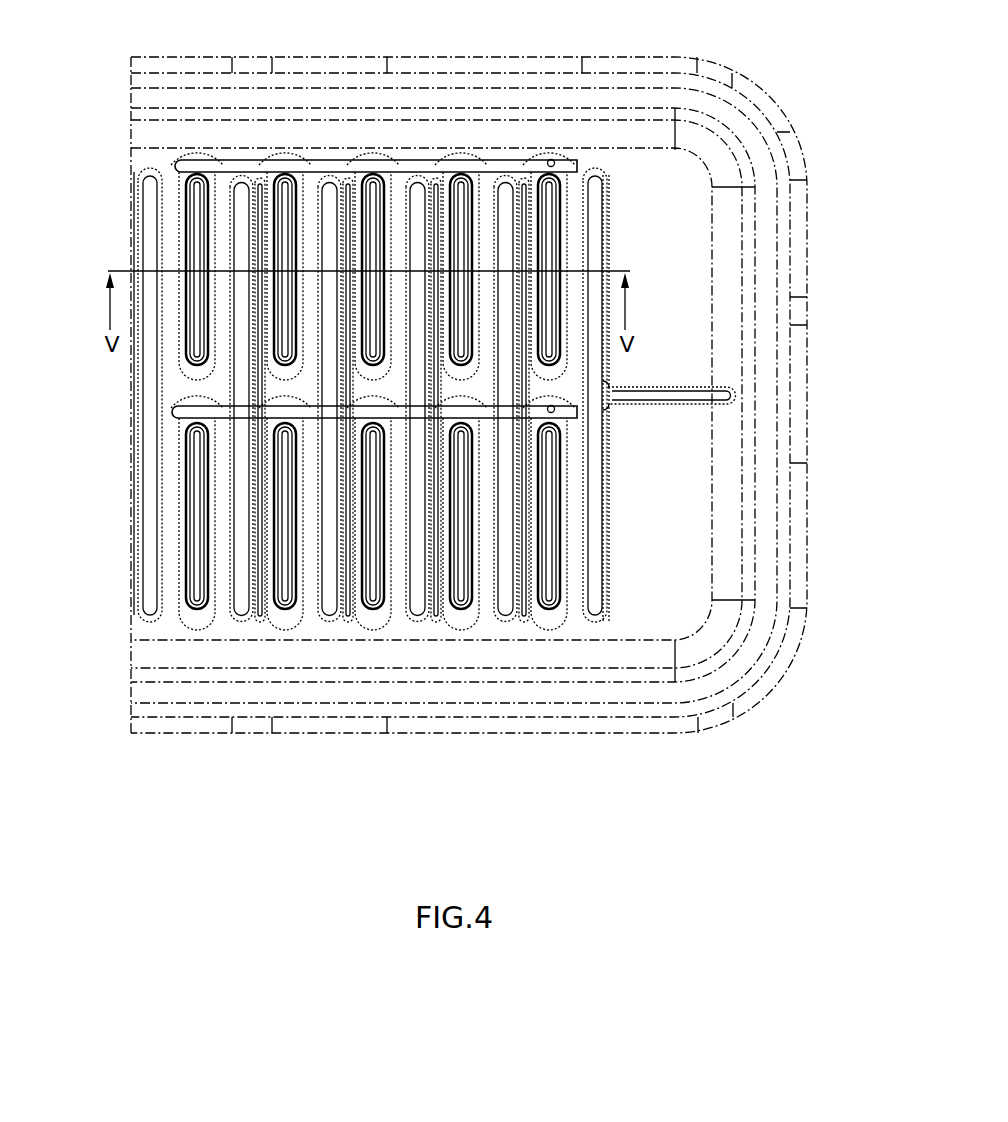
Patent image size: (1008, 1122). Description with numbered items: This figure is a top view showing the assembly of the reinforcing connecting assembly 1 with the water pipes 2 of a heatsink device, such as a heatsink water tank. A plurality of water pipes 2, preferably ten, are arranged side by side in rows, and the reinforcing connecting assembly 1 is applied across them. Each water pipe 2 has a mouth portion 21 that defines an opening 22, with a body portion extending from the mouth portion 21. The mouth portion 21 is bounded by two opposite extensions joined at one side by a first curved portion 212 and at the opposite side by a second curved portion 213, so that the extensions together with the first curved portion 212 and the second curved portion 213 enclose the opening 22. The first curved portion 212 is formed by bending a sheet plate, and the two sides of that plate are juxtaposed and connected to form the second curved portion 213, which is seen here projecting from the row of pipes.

The reinforcing connecting assembly 1 is at (507, 155).
The water pipe 2 is at (462, 389).
The mouth portion 21 is at (562, 195).
The opening 22 is at (562, 201).
The first curved portion 212 is at (552, 159).
The second curved portion 213 is at (612, 389).